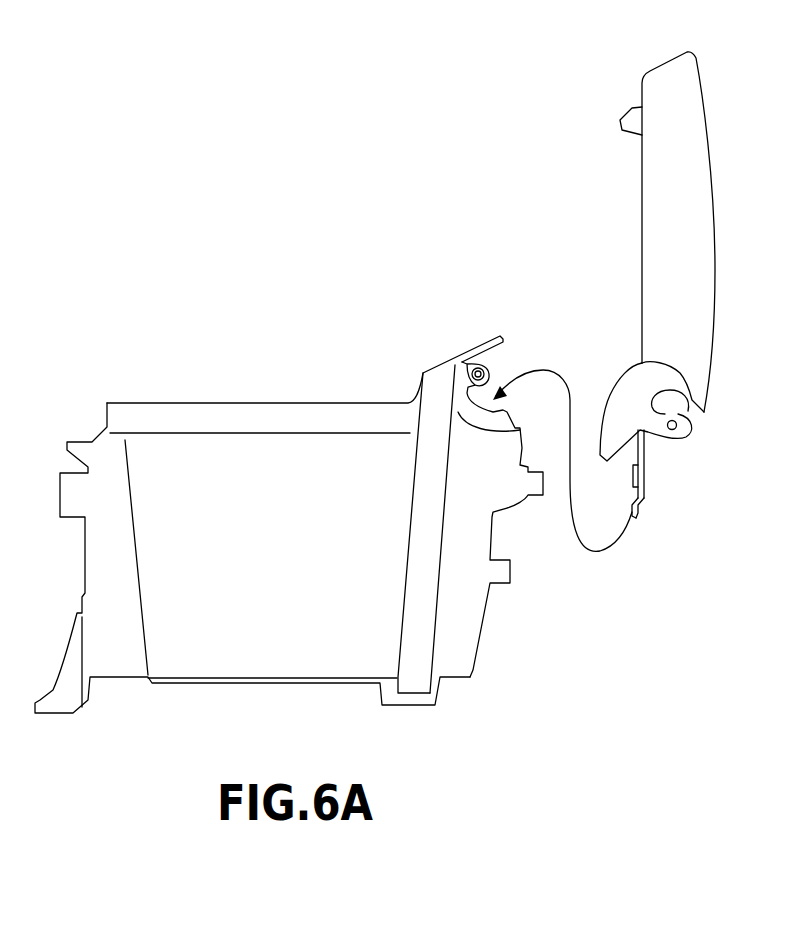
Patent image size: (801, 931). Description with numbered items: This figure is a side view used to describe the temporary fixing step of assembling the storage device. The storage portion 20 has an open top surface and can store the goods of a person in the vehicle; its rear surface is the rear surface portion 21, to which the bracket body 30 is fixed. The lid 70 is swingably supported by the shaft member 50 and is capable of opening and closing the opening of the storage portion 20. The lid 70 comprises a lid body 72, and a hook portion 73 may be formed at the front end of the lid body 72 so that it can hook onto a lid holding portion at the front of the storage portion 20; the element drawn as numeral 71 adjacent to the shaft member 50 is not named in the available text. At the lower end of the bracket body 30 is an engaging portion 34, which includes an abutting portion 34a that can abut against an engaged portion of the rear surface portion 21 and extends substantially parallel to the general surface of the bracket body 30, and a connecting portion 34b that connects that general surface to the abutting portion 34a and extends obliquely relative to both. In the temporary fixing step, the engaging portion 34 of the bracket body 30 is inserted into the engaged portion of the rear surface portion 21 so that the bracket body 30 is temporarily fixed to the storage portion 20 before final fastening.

The storage portion 20 is at (99, 425).
The rear surface portion 21 is at (480, 633).
The bracket body 30 is at (671, 552).
The engaging portion 34 is at (656, 586).
The abutting portion 34a is at (638, 508).
The connecting portion 34b is at (643, 508).
The shaft member 50 is at (684, 423).
The lid 70 is at (636, 256).
The hinge portion 71 is at (632, 380).
The lid body 72 is at (665, 206).
The hook portion 73 is at (637, 107).